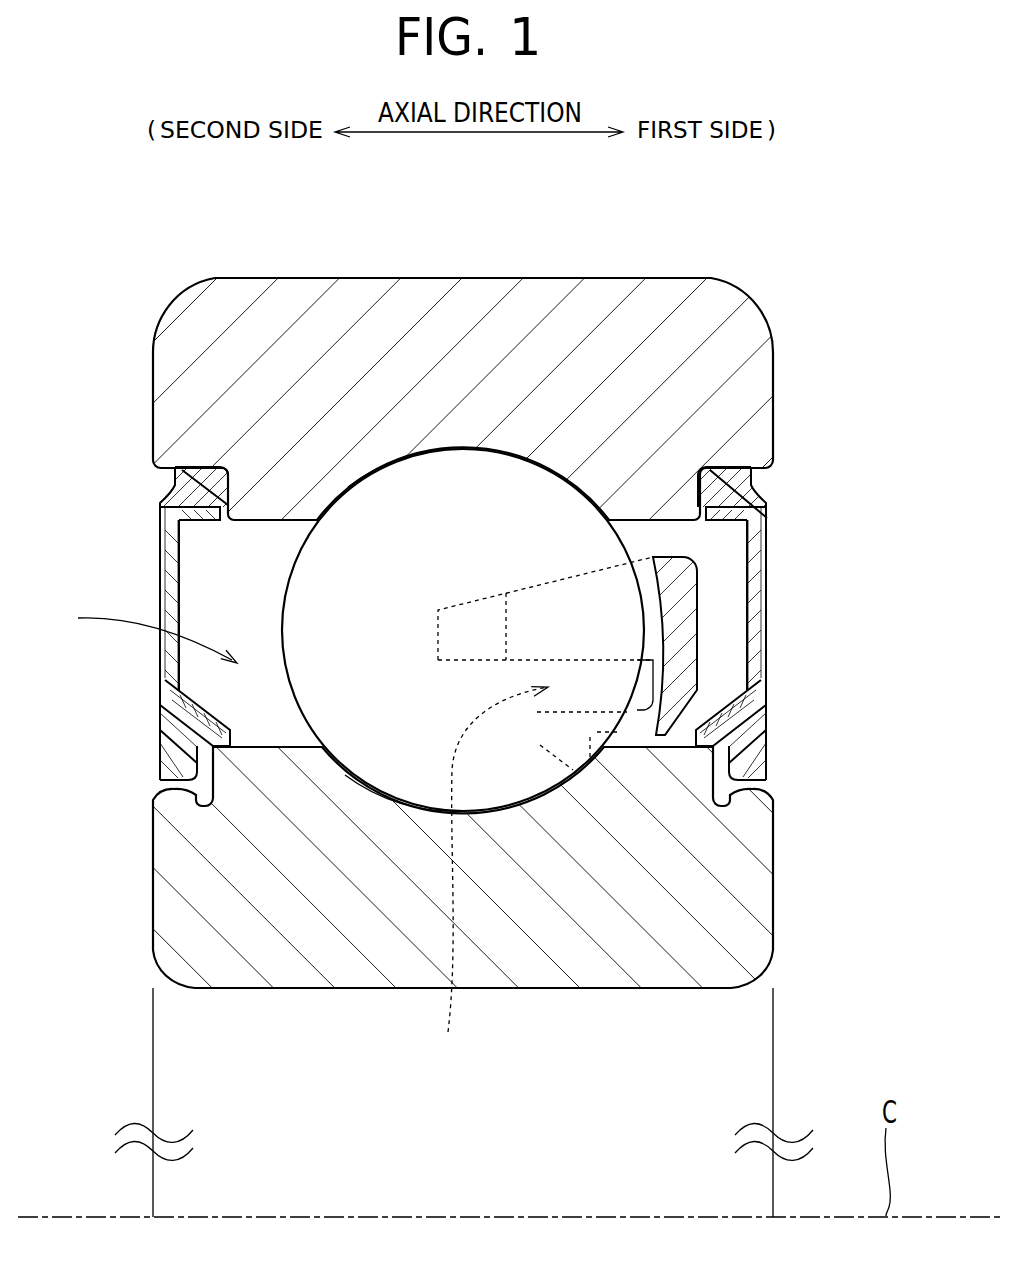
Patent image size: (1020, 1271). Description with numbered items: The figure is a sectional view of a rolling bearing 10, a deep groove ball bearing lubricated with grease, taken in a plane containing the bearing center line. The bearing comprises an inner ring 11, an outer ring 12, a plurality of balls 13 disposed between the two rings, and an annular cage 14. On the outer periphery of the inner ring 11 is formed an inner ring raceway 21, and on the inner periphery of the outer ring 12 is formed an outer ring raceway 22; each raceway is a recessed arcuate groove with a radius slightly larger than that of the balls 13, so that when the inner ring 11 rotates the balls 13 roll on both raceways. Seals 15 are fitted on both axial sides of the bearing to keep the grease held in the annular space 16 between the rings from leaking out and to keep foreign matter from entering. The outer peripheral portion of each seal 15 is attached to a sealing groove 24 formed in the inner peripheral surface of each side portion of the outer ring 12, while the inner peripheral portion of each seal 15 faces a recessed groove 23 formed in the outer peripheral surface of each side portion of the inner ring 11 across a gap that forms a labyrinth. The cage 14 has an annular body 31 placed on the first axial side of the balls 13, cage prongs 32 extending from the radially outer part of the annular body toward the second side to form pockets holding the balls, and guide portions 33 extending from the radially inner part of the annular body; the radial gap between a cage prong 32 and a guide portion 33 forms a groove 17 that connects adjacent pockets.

The rolling bearing 10 is at (510, 635).
The inner ring 11 is at (153, 862).
The outer ring 12 is at (153, 398).
The ball 13 is at (288, 592).
The cage 14 is at (667, 646).
The seal 15 is at (768, 673).
The annular space 16 is at (140, 633).
The groove 17 is at (491, 879).
The inner ring raceway 21 is at (345, 775).
The outer ring raceway 22 is at (347, 487).
The recessed groove 23 is at (768, 767).
The sealing groove 24 is at (753, 490).
The annular body 31 is at (683, 620).
The cage prong 32 is at (548, 580).
The guide portion 33 is at (537, 712).